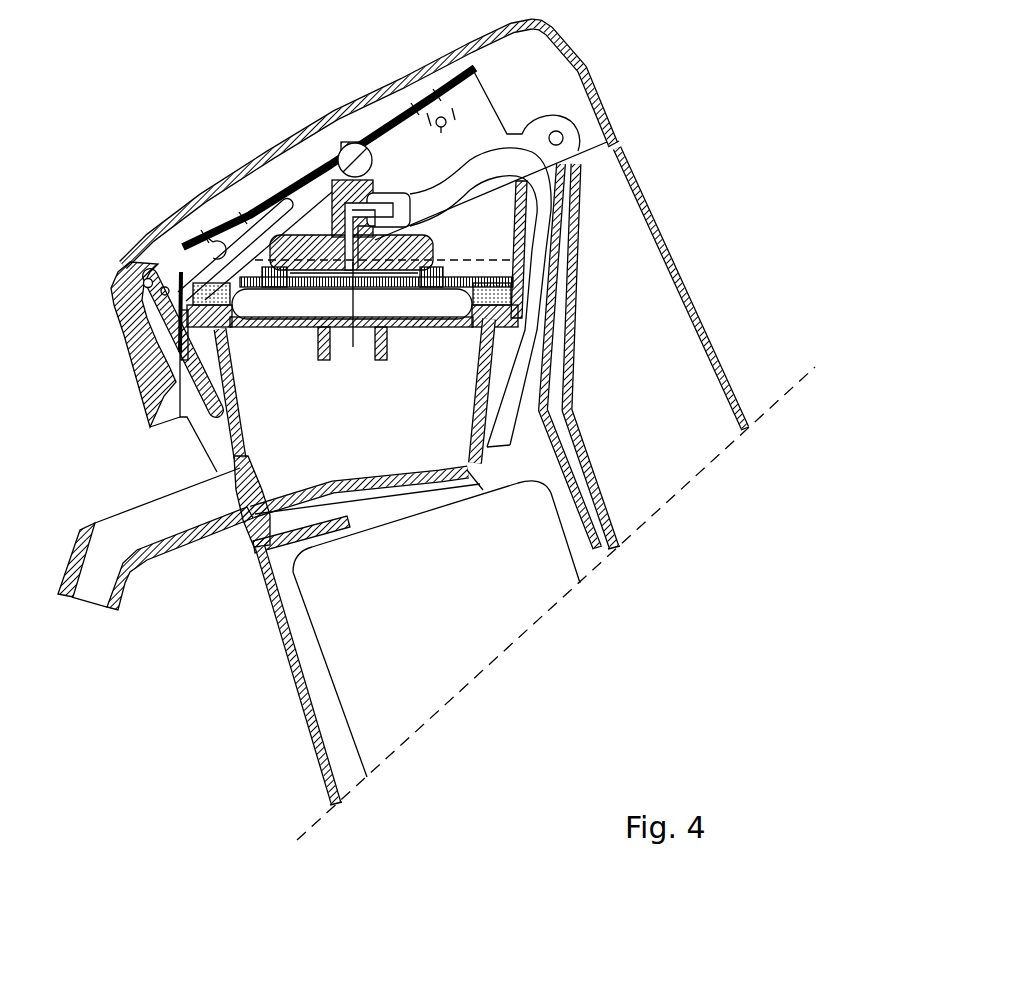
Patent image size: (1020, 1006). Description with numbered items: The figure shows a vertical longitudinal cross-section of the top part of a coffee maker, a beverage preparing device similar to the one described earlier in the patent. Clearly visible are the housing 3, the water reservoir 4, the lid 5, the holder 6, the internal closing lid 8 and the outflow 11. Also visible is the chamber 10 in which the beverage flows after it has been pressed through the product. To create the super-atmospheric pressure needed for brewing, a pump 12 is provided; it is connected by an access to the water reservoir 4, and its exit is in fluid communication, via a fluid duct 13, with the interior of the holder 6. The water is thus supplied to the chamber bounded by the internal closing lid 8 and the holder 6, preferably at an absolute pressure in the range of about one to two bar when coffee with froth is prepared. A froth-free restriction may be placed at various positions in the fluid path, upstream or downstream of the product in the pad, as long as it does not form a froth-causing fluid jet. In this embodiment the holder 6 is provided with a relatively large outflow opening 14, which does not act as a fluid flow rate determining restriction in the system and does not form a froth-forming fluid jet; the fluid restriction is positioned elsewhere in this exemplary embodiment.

The housing 3 is at (287, 640).
The water reservoir 4 is at (658, 208).
The lid 5 is at (300, 148).
The holder 6 is at (267, 329).
The internal closing lid 8 is at (458, 277).
The chamber 10 is at (432, 435).
The outflow 11 is at (130, 528).
The pump 12 is at (337, 643).
The fluid duct 13 is at (522, 380).
The outflow opening 14 is at (353, 347).